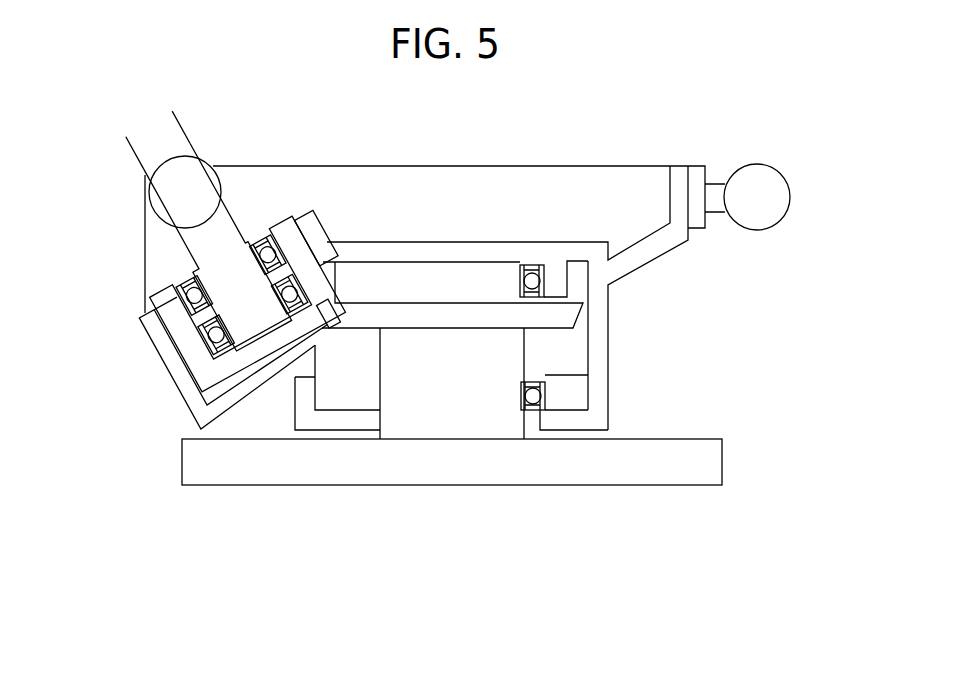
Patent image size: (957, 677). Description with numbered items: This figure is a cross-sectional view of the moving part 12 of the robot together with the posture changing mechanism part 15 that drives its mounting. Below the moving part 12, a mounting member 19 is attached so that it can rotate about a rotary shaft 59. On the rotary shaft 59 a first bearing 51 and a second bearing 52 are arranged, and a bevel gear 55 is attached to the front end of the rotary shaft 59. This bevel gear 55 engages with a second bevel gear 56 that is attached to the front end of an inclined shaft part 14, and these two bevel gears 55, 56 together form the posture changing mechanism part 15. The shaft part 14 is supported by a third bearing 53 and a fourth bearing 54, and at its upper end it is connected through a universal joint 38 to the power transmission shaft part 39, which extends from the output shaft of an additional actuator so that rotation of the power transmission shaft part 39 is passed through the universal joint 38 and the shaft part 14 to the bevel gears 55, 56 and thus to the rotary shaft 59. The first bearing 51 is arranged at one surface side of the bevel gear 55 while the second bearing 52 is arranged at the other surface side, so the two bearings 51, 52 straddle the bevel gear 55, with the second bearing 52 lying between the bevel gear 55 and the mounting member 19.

The moving part 12 is at (600, 185).
The shaft part 14 is at (210, 250).
The posture changing mechanism part 15 is at (708, 375).
The mounting member 19 is at (668, 465).
The universal joint 38 is at (186, 182).
The power transmission shaft part 39 is at (145, 142).
The first bearing 51 is at (533, 282).
The second bearing 52 is at (533, 397).
The third bearing 53 is at (165, 315).
The fourth bearing 54 is at (217, 342).
The bevel gear 55 is at (570, 313).
The bevel gear 56 is at (187, 393).
The rotary shaft 59 is at (470, 393).